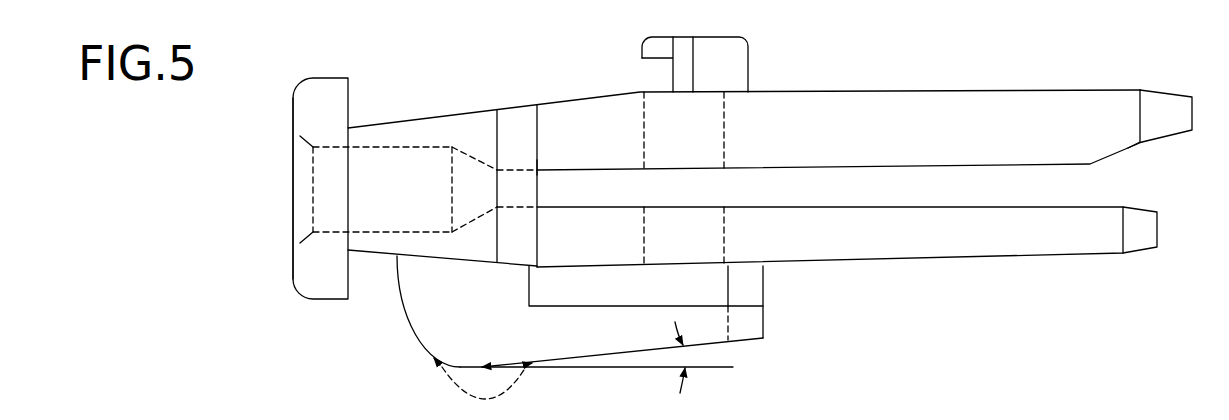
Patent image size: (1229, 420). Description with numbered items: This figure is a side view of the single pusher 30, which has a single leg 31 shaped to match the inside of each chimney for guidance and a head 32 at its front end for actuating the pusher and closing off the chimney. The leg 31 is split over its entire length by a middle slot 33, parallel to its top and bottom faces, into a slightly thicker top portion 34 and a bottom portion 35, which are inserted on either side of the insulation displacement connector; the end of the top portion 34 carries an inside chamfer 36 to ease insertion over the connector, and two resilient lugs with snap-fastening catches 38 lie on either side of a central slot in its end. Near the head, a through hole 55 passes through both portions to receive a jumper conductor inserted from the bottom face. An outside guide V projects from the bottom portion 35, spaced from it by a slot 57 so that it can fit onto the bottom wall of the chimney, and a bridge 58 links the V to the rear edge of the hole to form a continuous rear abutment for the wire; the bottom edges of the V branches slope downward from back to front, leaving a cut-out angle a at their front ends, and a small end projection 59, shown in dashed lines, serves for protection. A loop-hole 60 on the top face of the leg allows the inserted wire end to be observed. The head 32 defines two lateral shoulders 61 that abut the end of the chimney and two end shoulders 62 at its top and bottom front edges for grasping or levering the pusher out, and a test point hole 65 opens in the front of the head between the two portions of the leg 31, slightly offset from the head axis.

The single pusher 30 is at (923, 88).
The leg 31 is at (563, 98).
The head 32 is at (288, 116).
The middle slot 33 is at (940, 190).
The top portion 34 is at (1042, 102).
The bottom portion 35 is at (848, 245).
The inside chamfer 36 is at (1128, 148).
The snap-fastening catches 38 is at (1127, 112).
The through hole 55 is at (726, 138).
The slot 57 is at (600, 283).
The bridge 58 is at (753, 283).
The end projection 59 is at (452, 378).
The loop-hole 60 is at (728, 53).
The lateral shoulders 61 is at (538, 160).
The end shoulders 62 is at (336, 79).
The test point hole 65 is at (333, 148).
The cut-out angle a is at (688, 352).